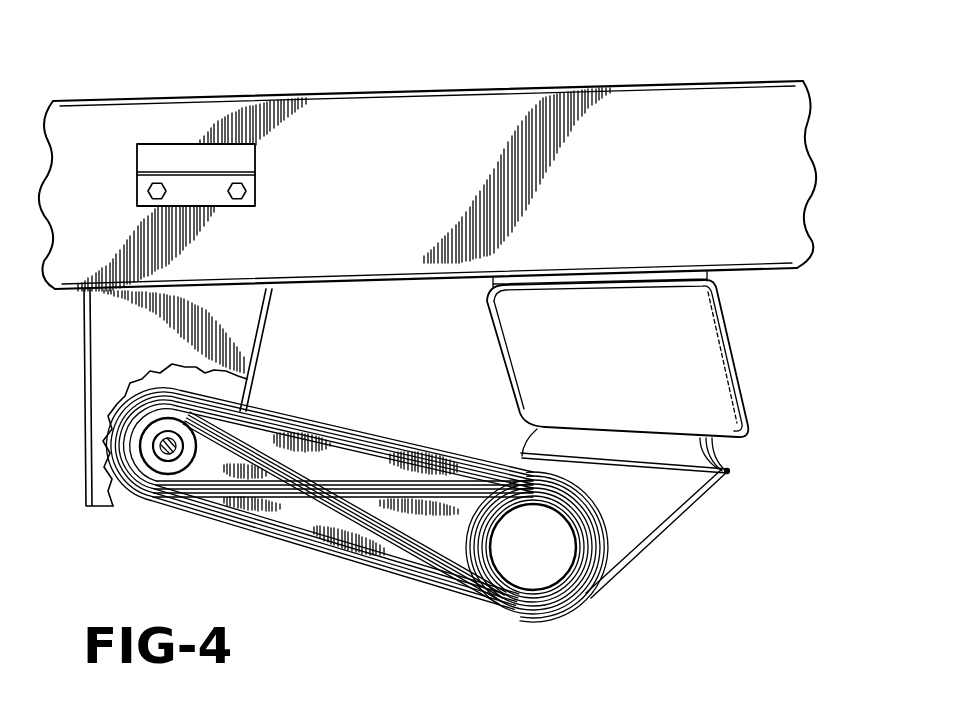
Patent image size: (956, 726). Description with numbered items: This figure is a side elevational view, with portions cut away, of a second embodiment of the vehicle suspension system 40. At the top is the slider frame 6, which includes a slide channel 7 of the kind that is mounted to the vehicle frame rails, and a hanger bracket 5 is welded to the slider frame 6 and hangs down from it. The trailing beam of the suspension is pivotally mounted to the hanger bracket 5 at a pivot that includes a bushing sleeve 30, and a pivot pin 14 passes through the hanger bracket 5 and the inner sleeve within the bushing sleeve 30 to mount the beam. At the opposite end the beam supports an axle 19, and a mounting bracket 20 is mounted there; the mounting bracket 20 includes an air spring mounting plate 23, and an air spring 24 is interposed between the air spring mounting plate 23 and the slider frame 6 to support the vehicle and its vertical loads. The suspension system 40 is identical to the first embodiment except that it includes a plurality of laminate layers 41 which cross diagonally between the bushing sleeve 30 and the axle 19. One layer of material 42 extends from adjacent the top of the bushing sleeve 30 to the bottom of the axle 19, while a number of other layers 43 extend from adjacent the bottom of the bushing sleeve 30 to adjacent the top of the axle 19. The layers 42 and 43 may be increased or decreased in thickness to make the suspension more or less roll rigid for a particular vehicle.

The hanger bracket 5 is at (240, 323).
The slider frame 6 is at (665, 78).
The slide channel 7 is at (738, 92).
The pivot pin 14 is at (160, 437).
The axle 19 is at (535, 565).
The mounting bracket 20 is at (664, 505).
The air spring mounting plate 23 is at (729, 470).
The air spring 24 is at (702, 352).
The bushing sleeve 30 is at (140, 440).
The suspension system 40 is at (632, 630).
The laminate layers 41 is at (330, 450).
The layer of material 42 is at (270, 457).
The other layers 43 is at (381, 487).